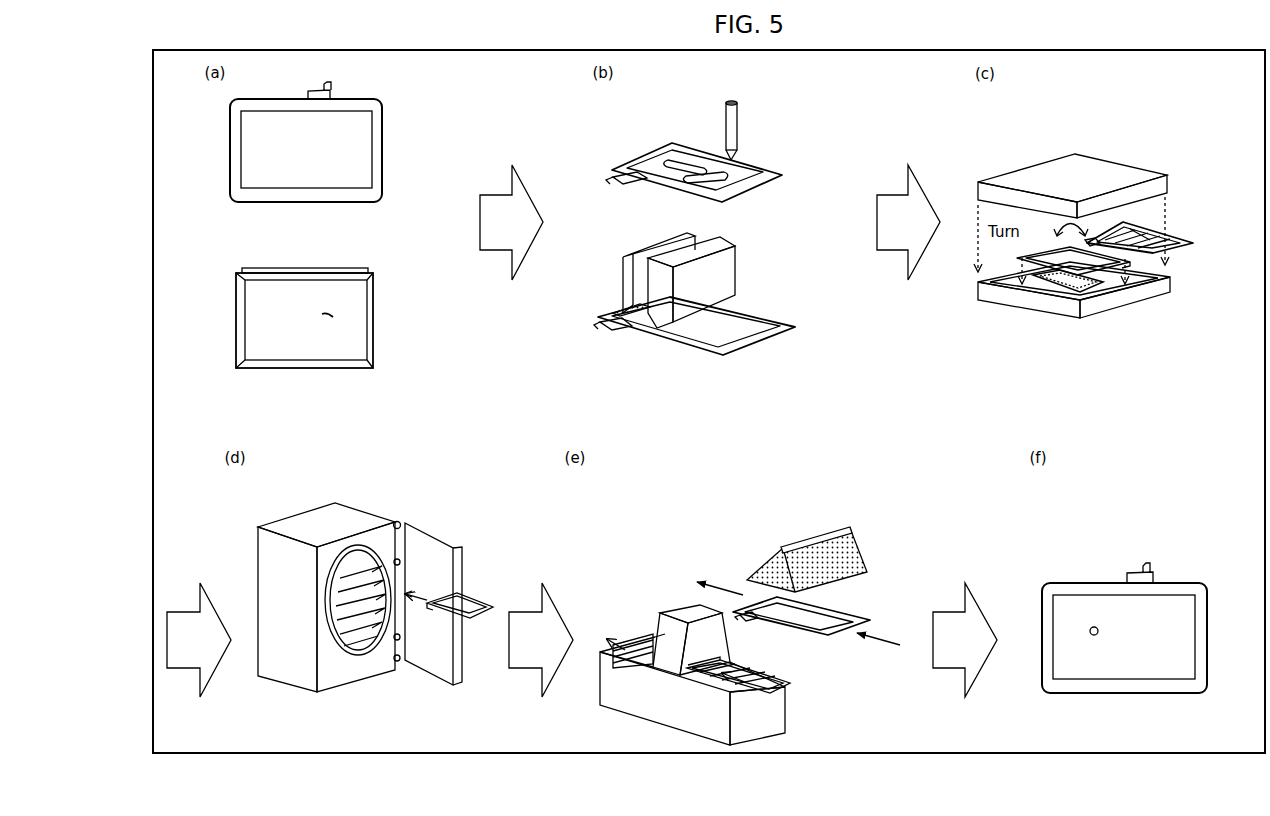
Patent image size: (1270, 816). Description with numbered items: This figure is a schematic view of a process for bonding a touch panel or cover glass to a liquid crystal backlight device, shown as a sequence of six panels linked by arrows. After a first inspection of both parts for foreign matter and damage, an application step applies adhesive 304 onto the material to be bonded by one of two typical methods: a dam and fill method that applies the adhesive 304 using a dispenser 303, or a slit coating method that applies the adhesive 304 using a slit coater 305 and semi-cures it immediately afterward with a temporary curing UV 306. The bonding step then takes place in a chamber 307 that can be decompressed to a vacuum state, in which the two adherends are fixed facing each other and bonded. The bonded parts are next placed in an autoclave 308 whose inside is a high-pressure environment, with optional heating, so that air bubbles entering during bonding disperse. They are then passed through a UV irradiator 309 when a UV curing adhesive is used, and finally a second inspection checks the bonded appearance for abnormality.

The dispenser 303 is at (737, 125).
The adhesive 304 is at (752, 165).
The slit coater 305 is at (728, 270).
The temporary curing UV 306 is at (687, 232).
The chamber 307 is at (1132, 175).
The autoclave 308 is at (358, 522).
The UV irradiator 309 is at (668, 613).